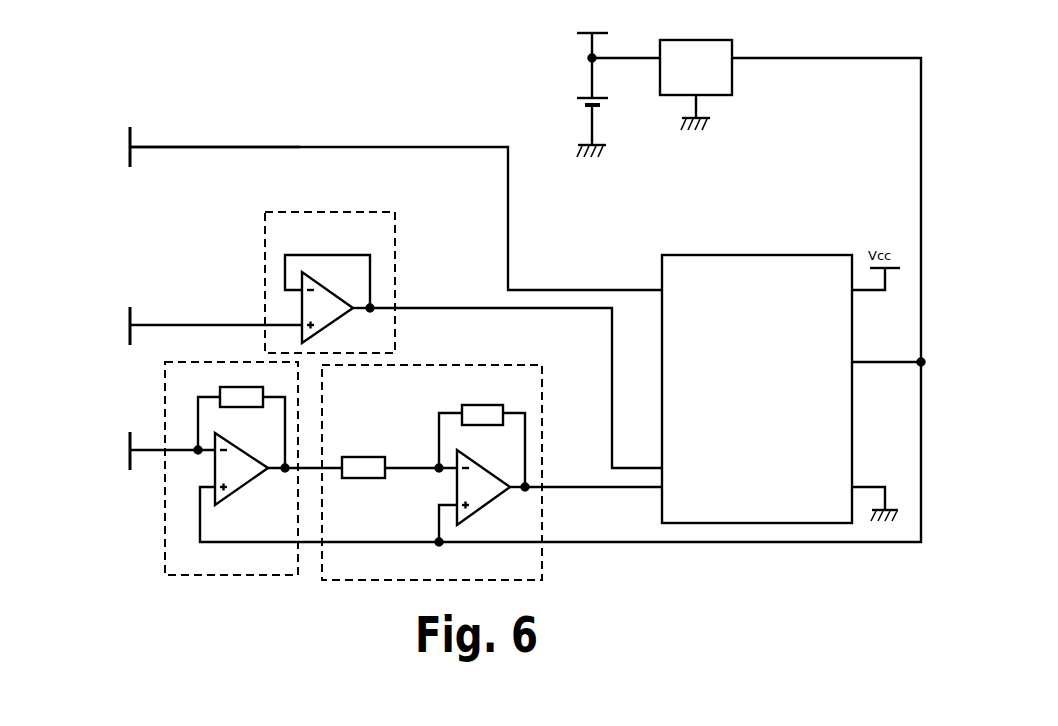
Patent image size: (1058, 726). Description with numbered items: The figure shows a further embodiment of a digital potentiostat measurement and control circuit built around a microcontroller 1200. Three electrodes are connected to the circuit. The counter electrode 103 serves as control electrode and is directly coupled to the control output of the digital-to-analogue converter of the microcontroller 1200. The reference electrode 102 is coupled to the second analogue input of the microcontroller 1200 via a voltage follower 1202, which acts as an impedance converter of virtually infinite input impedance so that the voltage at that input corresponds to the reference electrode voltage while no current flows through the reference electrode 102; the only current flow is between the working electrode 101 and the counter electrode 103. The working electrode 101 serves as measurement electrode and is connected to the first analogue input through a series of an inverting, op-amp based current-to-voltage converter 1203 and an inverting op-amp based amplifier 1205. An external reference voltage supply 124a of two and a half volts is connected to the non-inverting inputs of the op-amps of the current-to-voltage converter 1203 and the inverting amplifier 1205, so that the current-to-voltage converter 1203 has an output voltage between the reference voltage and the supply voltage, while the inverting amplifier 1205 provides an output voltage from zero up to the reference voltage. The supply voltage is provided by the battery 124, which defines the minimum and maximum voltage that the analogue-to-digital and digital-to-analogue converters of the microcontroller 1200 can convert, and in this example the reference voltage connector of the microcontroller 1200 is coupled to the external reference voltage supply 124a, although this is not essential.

The working electrode 101 is at (120, 487).
The reference electrode 102 is at (115, 325).
The counter electrode 103 is at (112, 137).
The battery 124 is at (560, 70).
The external 2.5V reference voltage supply 124a is at (747, 100).
The microcontroller 1200 is at (783, 510).
The voltage follower 1202 is at (293, 233).
The current-to-voltage converter 1203 is at (180, 532).
The inverting op-amp based amplifier 1205 is at (442, 382).